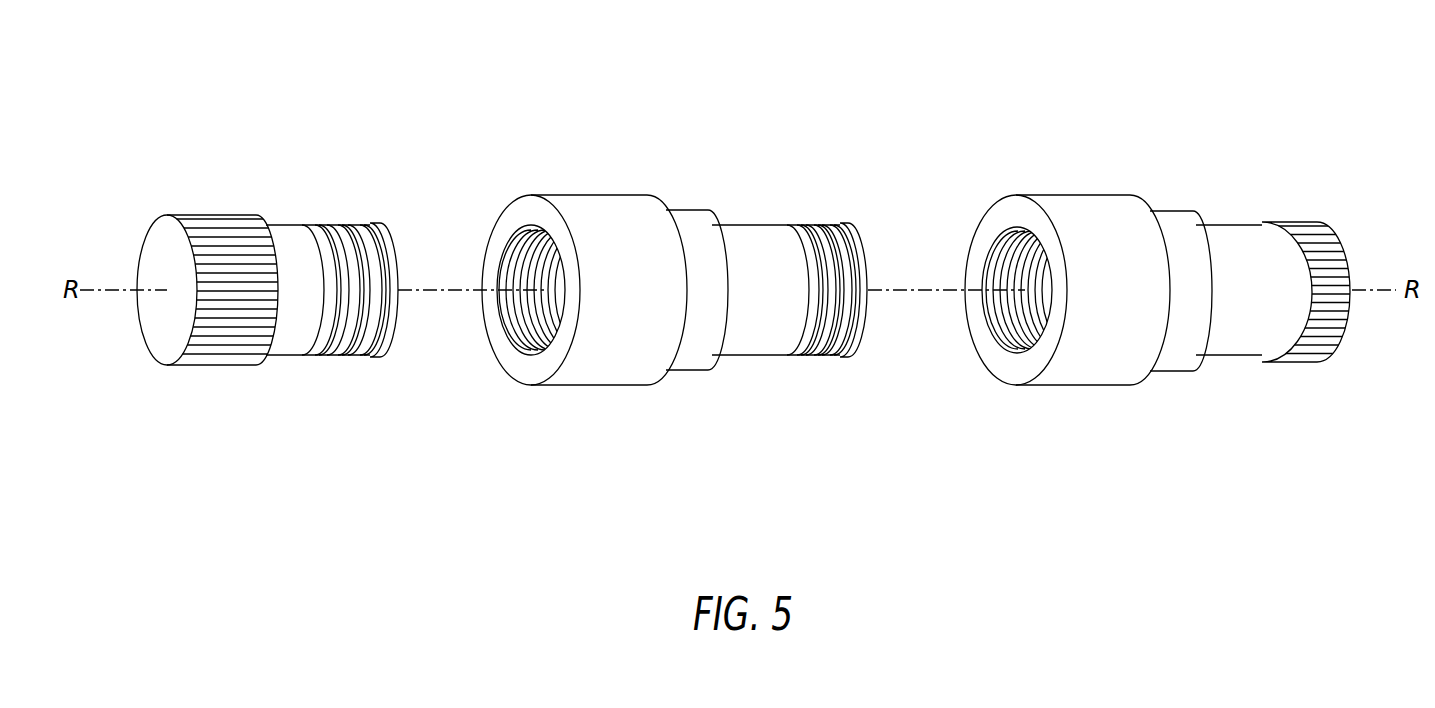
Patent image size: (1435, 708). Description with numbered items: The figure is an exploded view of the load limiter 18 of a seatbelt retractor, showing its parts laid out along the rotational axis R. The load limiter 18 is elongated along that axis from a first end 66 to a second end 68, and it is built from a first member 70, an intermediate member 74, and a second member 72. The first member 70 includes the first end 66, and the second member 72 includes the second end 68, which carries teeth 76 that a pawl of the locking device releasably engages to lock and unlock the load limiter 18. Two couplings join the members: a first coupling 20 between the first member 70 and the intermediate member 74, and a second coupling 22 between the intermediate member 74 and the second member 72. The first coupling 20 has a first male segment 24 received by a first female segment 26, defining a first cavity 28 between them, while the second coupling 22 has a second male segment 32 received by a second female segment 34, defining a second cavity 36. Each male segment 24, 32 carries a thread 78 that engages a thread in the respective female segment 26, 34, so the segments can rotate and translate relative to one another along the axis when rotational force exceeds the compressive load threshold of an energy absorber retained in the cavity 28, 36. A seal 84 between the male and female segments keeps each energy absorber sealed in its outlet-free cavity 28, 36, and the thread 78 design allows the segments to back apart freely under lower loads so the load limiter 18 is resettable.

The load limiter 18 is at (1100, 107).
The first coupling 20 is at (482, 198).
The second coupling 22 is at (942, 199).
The first male segment 24 is at (396, 322).
The first female segment 26 is at (517, 343).
The first cavity 28 is at (518, 270).
The second male segment 32 is at (865, 322).
The second female segment 34 is at (1000, 345).
The second cavity 36 is at (1005, 270).
The first end of the load limiter 66 is at (189, 199).
The second end of the load limiter 68 is at (1295, 207).
The first member 70 is at (272, 202).
The second member 72 is at (1216, 185).
The intermediate member 74 is at (636, 174).
The teeth 76 is at (224, 354).
The thread 78 is at (330, 227).
The seal 84 is at (358, 225).